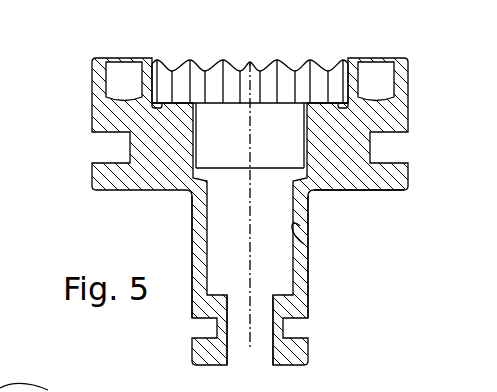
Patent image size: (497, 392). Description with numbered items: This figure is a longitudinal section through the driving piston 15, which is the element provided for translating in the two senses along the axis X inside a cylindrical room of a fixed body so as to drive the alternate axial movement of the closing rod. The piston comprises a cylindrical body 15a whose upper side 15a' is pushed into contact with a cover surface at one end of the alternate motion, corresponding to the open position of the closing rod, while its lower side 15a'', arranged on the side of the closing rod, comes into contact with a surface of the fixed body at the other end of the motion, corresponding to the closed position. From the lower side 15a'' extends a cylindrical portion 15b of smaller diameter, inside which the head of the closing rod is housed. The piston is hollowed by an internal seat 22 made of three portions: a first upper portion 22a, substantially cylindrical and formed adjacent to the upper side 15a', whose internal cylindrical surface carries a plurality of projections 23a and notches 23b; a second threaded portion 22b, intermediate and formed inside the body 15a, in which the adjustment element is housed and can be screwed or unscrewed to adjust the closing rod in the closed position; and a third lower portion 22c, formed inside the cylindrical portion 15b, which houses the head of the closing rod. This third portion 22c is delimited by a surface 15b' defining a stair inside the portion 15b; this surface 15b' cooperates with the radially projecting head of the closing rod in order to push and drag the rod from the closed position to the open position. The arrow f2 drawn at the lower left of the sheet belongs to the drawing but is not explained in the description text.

The driving piston 15 is at (80, 50).
The body 15a is at (223, 211).
The upper side 15a' is at (265, 56).
The lower side 15a'' is at (368, 208).
The cylindrical portion 15b is at (224, 257).
The surface 15b' is at (299, 325).
The internal seat 22 is at (154, 49).
The first upper portion 22a is at (325, 67).
The second threaded portion 22b is at (292, 124).
The third lower portion 22c is at (307, 244).
The projections 23a is at (210, 78).
The notches 23b is at (300, 60).
The axis X is at (250, 148).
The force direction f2 is at (47, 388).